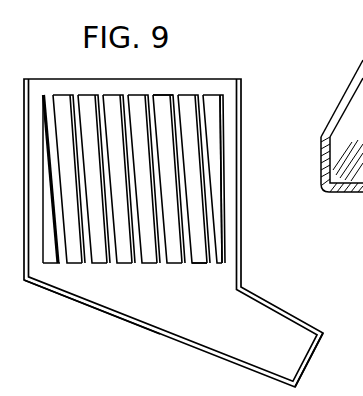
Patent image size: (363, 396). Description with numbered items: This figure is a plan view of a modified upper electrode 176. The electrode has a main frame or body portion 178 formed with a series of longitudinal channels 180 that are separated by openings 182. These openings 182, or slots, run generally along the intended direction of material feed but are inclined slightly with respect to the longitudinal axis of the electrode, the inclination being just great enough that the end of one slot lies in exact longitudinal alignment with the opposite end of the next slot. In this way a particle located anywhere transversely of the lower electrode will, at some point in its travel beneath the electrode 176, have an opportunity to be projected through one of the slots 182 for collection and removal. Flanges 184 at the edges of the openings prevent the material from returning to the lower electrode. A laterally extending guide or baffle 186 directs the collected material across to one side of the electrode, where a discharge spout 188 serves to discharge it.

The upper electrode 176 is at (247, 121).
The main frame or body portion 178 is at (170, 92).
The longitudinal channels 180 is at (205, 157).
The openings 182 is at (202, 250).
The flanges 184 is at (212, 112).
The guide or baffle 186 is at (110, 308).
The discharge spout 188 is at (295, 362).